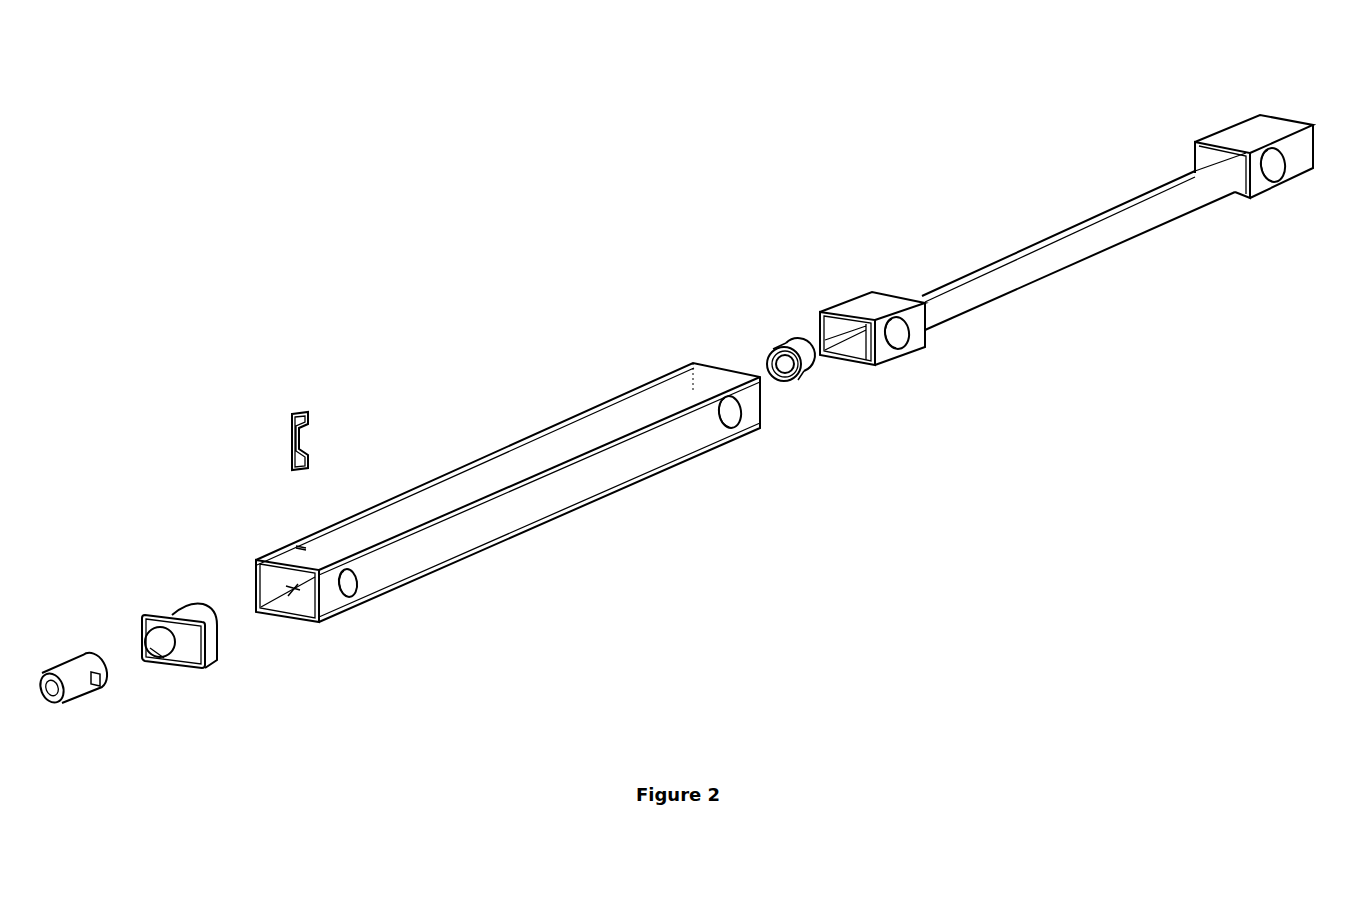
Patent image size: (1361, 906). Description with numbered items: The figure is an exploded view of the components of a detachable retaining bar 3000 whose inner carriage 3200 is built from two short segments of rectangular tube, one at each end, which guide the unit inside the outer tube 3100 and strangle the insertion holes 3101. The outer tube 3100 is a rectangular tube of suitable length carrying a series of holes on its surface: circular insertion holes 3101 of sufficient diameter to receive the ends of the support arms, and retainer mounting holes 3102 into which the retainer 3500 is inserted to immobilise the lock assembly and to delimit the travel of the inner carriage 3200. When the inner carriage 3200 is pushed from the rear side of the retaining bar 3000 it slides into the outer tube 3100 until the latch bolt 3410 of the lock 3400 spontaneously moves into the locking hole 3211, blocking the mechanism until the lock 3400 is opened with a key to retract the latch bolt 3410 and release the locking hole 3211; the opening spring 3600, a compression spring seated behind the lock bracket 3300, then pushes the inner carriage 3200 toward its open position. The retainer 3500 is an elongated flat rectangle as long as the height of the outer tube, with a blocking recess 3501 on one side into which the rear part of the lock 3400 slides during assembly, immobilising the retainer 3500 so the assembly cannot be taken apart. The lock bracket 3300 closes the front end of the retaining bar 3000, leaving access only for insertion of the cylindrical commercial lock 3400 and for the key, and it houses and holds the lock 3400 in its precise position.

The retaining bar 3000 is at (674, 385).
The outer tube 3100 is at (438, 488).
The circular insertion holes 3101 is at (357, 588).
The retainer mounting holes 3102 is at (290, 587).
The inner carriage 3200 is at (1066, 283).
The locking hole 3211 is at (923, 350).
The lock bracket 3300 is at (178, 617).
The lock 3400 is at (123, 706).
The latch bolt 3410 is at (100, 678).
The retainer 3500 is at (345, 421).
The blocking recess 3501 is at (304, 434).
The opening spring 3600 is at (776, 345).